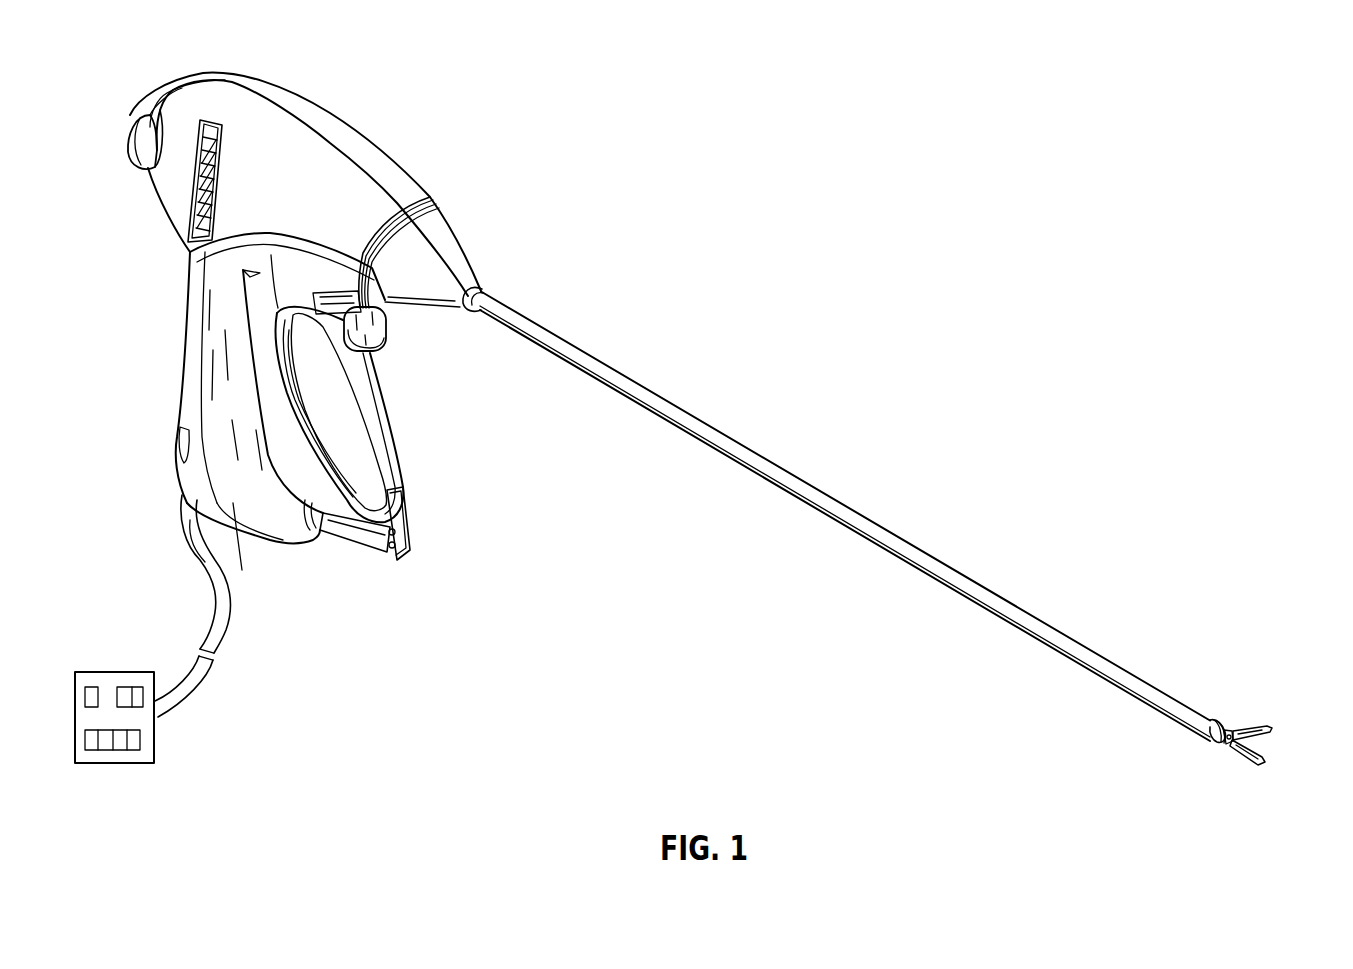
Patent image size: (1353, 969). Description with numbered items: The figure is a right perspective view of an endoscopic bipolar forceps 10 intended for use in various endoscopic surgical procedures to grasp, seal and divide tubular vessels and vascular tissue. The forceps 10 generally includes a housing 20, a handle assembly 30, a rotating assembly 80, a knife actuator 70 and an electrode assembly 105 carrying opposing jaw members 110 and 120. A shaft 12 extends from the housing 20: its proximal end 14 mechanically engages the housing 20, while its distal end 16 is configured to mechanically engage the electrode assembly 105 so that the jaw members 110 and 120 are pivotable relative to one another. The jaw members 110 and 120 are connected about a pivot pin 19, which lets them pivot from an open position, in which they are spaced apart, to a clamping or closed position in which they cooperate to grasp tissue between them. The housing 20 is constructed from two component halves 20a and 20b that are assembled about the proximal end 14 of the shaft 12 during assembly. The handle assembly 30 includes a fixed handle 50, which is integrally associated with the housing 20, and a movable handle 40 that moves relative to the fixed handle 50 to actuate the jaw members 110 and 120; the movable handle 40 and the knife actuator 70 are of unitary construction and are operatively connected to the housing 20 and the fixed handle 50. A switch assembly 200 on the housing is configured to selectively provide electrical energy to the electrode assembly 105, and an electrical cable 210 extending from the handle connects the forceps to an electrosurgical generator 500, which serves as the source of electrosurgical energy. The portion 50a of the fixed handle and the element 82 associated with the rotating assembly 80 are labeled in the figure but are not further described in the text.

The bipolar forceps 10 is at (900, 220).
The shaft 12 is at (840, 508).
The proximal end 14 is at (484, 291).
The distal end 16 is at (1208, 728).
The pivot pin 19 is at (1224, 743).
The housing 20 is at (348, 110).
The component half 20a is at (335, 168).
The component half 20b is at (397, 184).
The handle assembly 30 is at (420, 449).
The movable handle 40 is at (380, 398).
The fixed handle 50 is at (296, 552).
The fixed handle portion 50a is at (242, 570).
The knife actuator 70 is at (398, 324).
The rotating assembly 80 is at (199, 118).
The switch 82 is at (230, 137).
The electrode assembly 105 is at (1260, 723).
The jaw member 110 is at (1272, 731).
The jaw member 120 is at (1252, 768).
The switch assembly 200 is at (138, 146).
The electrical cable 210 is at (224, 612).
The electrosurgical generator 500 is at (148, 746).